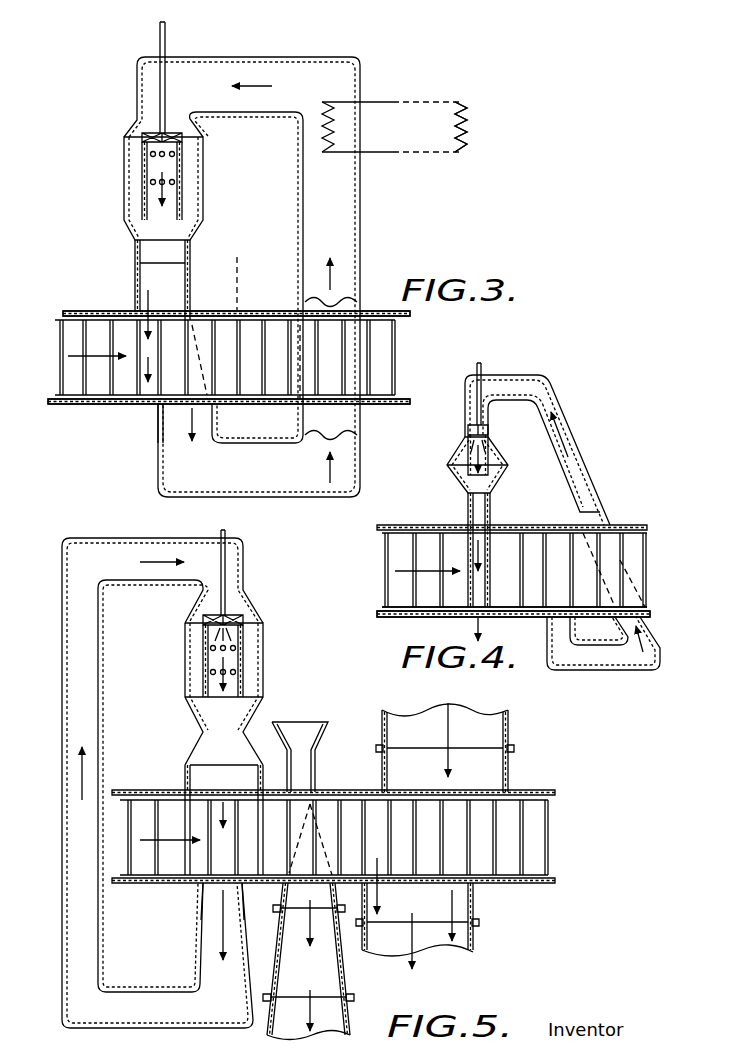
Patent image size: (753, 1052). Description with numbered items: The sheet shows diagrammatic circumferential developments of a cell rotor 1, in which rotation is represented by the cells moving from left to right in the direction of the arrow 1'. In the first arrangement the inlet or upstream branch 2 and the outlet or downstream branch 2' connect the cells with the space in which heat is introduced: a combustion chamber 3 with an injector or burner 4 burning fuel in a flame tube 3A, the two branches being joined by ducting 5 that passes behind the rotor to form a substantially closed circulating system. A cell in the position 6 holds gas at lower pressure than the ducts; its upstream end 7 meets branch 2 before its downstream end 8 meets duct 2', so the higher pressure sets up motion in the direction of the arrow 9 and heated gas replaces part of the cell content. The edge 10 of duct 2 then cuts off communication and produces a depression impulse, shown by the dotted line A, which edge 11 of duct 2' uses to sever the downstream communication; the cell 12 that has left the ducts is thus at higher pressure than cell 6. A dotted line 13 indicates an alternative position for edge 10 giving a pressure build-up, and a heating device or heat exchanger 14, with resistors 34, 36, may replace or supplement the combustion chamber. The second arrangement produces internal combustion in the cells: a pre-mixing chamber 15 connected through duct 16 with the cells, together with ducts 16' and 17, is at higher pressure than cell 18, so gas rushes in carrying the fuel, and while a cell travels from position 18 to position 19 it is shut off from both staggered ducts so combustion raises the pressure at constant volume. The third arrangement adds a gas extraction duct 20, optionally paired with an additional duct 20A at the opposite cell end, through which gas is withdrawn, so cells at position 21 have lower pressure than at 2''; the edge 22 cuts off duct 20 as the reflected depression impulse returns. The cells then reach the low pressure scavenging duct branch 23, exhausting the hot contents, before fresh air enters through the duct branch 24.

In FIG. 3, the cell rotor 1 is at (218, 357).
In FIG. 4, the cell rotor 1 is at (496, 598).
In FIG. 5, the cell rotor 1 is at (333, 855).
In FIG. 3, the direction of cell movement arrow 1' is at (94, 341).
In FIG. 4, the direction of cell movement arrow 1' is at (426, 554).
In FIG. 3, the inlet or upstream branch duct 2 is at (142, 289).
In FIG. 5, the inlet or upstream branch duct 2 is at (208, 813).
In FIG. 3, the outlet or downstream branch duct 2' is at (153, 435).
In FIG. 5, the outlet or downstream branch duct 2' is at (203, 921).
In FIG. 5, the cell position leaving duct 2 2'' is at (260, 825).
In FIG. 3, the combustion chamber 3 is at (132, 200).
In FIG. 5, the combustion chamber 3 is at (185, 671).
In FIG. 3, the flame tube 3A is at (183, 193).
In FIG. 4, the flame tube 3A is at (492, 470).
In FIG. 5, the flame tube 3A is at (246, 662).
In FIG. 3, the injector or burner 4 is at (148, 136).
In FIG. 5, the injector or burner 4 is at (205, 617).
In FIG. 3, the ducting 5 is at (343, 200).
In FIG. 5, the ducting 5 is at (62, 652).
In FIG. 3, the cell position before communication with ducts 6 is at (124, 397).
In FIG. 3, the upstream end of cell 7 is at (128, 314).
In FIG. 3, the downstream end of cell 8 is at (175, 386).
In FIG. 3, the pressure impulse direction arrow 9 is at (152, 358).
In FIG. 3, the edge of duct 2 10 is at (190, 317).
In FIG. 3, the edge of duct 2' 11 is at (218, 447).
In FIG. 3, the cell after leaving ducts 12 is at (223, 389).
In FIG. 3, the alternative edge position line 13 is at (239, 284).
In FIG. 3, the heating device (heat exchanger) 14 is at (338, 130).
In FIG. 4, the pre-mixing chamber 15 is at (462, 447).
In FIG. 4, the duct 16 is at (455, 557).
In FIG. 4, the return duct 16' is at (603, 661).
In FIG. 4, the duct 17 is at (578, 428).
In FIG. 4, the cell position at gas inrush 18 is at (457, 542).
In FIG. 4, the cell position after constant volume combustion 19 is at (530, 543).
In FIG. 5, the gas extraction duct 20 is at (285, 888).
In FIG. 5, the additional gas extraction duct 20A is at (303, 728).
In FIG. 5, the cell position after tapping 21 is at (350, 816).
In FIG. 5, the edge of extraction duct 22 is at (337, 888).
In FIG. 5, the low pressure scavenging duct branch 23 is at (465, 900).
In FIG. 5, the fresh air duct branch 24 is at (500, 762).
In FIG. 3, the resistor 34 is at (470, 135).
In FIG. 3, the resistor 36 is at (461, 127).
In FIG. 3, the depression impulse line A is at (196, 349).